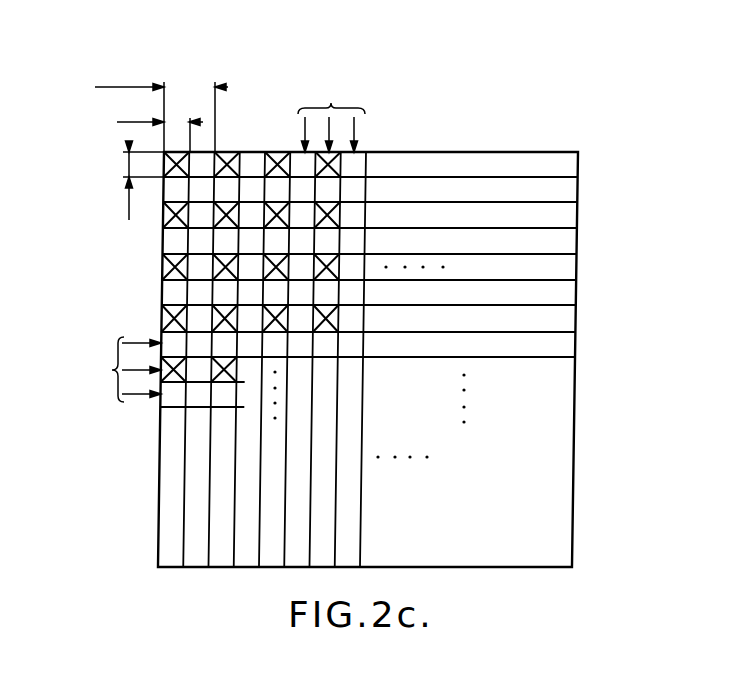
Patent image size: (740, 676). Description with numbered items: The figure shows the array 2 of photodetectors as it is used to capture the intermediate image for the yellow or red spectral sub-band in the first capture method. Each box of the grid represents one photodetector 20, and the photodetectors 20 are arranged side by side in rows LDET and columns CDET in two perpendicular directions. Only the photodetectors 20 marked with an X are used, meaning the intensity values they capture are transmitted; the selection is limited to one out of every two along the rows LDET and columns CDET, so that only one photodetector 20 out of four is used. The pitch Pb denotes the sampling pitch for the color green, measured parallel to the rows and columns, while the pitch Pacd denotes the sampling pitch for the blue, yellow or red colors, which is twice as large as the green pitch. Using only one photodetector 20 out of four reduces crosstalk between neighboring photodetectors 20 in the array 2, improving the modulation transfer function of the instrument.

The array of photodetectors 2 is at (578, 240).
The photodetector 20 is at (160, 312).
The sampling pitch for blue, yellow or red Pacd is at (161, 101).
The sampling pitch for green Pb is at (155, 161).
The columns of photodetectors CDET is at (331, 111).
The rows of photodetectors LDET is at (108, 369).